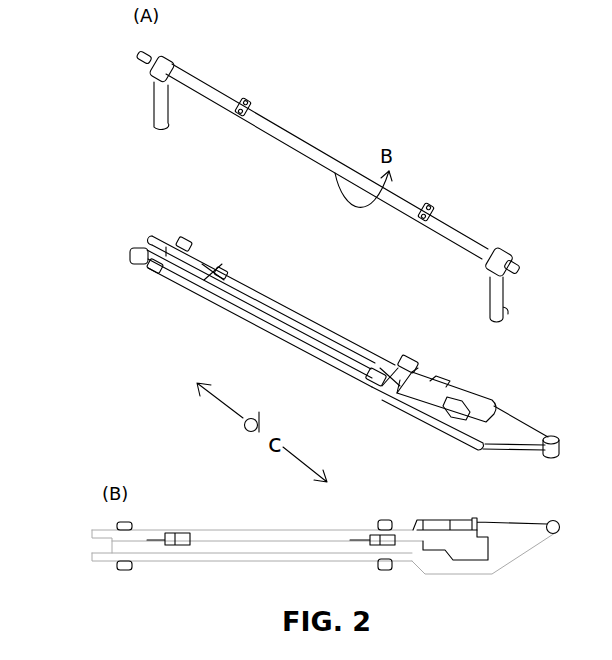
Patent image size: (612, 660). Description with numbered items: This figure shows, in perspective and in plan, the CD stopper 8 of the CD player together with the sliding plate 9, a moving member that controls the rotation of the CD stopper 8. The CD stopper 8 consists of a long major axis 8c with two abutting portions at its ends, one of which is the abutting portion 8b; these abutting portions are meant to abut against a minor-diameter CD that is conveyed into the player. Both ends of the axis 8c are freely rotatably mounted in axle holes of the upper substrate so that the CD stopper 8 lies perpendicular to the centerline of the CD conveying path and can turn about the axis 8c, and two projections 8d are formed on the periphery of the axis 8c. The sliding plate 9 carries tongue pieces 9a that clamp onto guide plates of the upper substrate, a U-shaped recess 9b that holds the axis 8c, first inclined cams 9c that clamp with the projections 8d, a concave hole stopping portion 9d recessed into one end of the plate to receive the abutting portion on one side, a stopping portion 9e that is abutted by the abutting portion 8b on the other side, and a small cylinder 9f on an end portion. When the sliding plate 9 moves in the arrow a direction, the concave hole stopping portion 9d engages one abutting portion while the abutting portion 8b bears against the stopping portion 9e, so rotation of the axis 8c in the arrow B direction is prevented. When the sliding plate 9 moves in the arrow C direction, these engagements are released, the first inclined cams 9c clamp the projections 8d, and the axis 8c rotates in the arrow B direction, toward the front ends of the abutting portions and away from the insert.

The CD stopper 8 is at (364, 93).
The abutting portion 8b is at (492, 284).
The major axis 8c is at (158, 108).
The projection 8d is at (430, 210).
The sliding plate 9 is at (309, 288).
The tongue piece 9a is at (187, 237).
The U-shaped recess 9b is at (248, 297).
The first inclined cam 9c is at (205, 278).
The concave hole stopping portion 9d is at (152, 250).
The stopping portion 9e is at (440, 433).
The small cylinder 9f is at (551, 436).